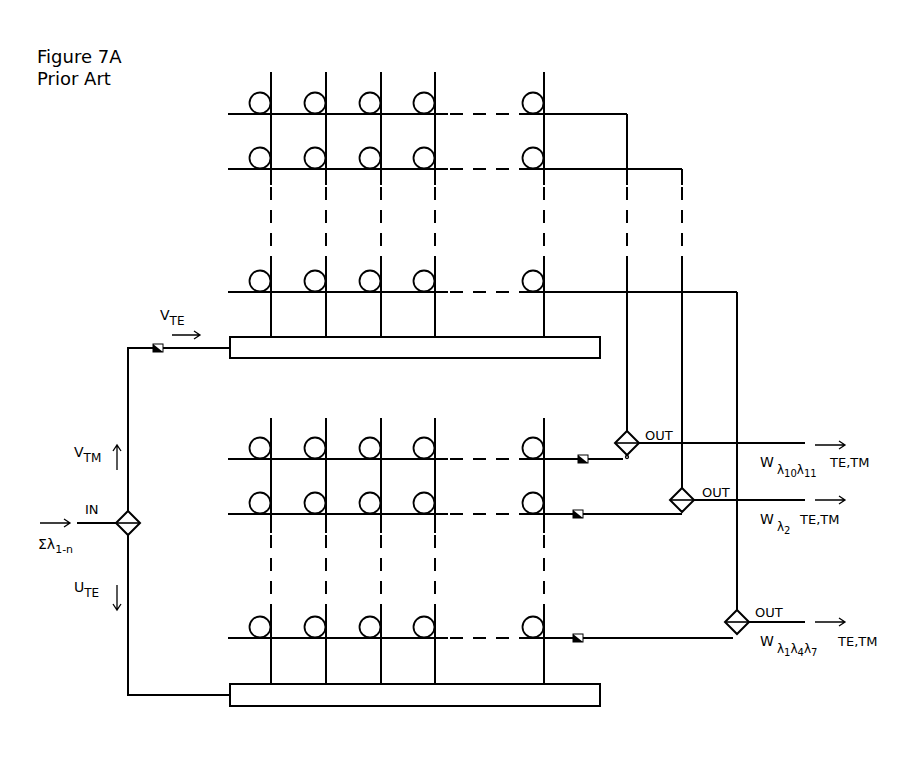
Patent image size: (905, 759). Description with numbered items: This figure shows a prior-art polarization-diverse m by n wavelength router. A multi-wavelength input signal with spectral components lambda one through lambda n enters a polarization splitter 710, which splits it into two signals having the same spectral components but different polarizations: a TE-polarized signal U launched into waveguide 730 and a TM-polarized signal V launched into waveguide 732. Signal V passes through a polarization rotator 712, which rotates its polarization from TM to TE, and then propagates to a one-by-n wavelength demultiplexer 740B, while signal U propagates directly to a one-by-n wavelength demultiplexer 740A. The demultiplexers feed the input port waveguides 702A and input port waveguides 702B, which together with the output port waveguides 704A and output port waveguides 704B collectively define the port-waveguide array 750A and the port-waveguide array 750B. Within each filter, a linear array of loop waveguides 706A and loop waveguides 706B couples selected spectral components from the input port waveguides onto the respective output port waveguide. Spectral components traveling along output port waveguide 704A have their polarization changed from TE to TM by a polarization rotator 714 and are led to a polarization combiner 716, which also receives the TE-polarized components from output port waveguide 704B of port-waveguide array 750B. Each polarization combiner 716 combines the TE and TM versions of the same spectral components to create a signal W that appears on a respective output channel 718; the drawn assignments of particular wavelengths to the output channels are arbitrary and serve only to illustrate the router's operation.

The port-waveguide array 750B is at (221, 98).
The input port waveguide 702B is at (268, 199).
The loop waveguide 706B is at (247, 272).
The output port waveguide 704B is at (228, 292).
The 1×n wavelength demultiplexer 740B is at (415, 347).
The port-waveguide array 750A is at (217, 429).
The input port waveguide 702A is at (269, 556).
The loop waveguide 706A is at (247, 618).
The output port waveguide 704A is at (228, 638).
The 1×n wavelength demultiplexer 740A is at (415, 695).
The polarization splitter 710 is at (137, 512).
The polarization rotator 712 is at (154, 345).
The waveguide 732 is at (123, 412).
The waveguide 730 is at (123, 662).
The polarization rotator 714 is at (586, 519).
The polarization combiner 716 is at (672, 497).
The output channel 718 is at (706, 512).